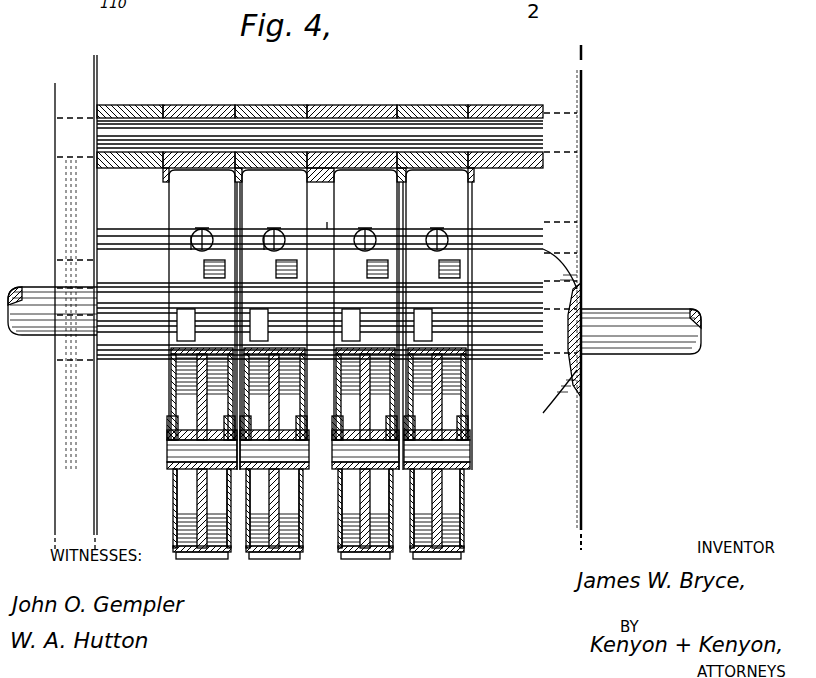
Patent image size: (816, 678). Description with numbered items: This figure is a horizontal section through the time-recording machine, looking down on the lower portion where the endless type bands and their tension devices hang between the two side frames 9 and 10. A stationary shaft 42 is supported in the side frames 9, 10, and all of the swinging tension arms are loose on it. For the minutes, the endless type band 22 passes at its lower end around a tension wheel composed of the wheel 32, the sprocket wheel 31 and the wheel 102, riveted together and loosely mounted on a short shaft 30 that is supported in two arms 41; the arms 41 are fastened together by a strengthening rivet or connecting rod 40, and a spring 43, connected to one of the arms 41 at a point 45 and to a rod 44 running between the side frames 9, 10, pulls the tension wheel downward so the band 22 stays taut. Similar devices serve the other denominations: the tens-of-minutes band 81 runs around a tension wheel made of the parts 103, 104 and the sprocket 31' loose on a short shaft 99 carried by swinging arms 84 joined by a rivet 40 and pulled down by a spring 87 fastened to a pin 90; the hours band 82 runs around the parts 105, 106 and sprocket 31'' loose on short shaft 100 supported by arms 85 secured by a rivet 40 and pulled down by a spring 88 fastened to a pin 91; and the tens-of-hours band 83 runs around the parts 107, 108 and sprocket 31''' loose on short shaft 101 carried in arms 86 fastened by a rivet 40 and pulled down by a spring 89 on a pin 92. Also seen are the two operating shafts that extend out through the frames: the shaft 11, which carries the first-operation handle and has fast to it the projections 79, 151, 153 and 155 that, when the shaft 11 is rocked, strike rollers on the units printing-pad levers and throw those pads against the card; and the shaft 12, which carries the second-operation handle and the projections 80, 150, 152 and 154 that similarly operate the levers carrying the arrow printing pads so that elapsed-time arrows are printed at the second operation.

The side frame 9 is at (56, 186).
The side frame 10 is at (571, 199).
The shaft 11 is at (33, 318).
The shaft 12 is at (661, 320).
The endless type band 22 is at (460, 554).
The short shaft 30 is at (470, 458).
The sprocket wheel 31 is at (437, 572).
The sprocket wheel 31' is at (365, 562).
The sprocket wheel 31'' is at (274, 563).
The sprocket wheel 31''' is at (202, 565).
The wheel 32 is at (455, 524).
The connecting rod 40 is at (215, 278).
The swinging arm 41 is at (483, 398).
The stationary shaft 42 is at (491, 122).
The spring 43 is at (438, 222).
The rod 44 is at (512, 228).
The spring connection point 45 is at (470, 222).
The projection 79 is at (505, 262).
The projection 80 is at (424, 325).
The endless band 81 is at (341, 548).
The endless band 82 is at (301, 552).
The endless band 83 is at (228, 553).
The swinging arm 84 is at (367, 191).
The swinging arm 85 is at (277, 189).
The swinging arm 86 is at (201, 189).
The spring 87 is at (367, 245).
The spring 88 is at (277, 245).
The spring 89 is at (203, 245).
The pin 90 is at (327, 222).
The pin 91 is at (264, 247).
The pin 92 is at (190, 248).
The short shaft 99 is at (345, 470).
The short shaft 100 is at (252, 470).
The short shaft 101 is at (174, 468).
The wheel 102 is at (425, 528).
The tension wheel part 103 is at (377, 520).
The tension wheel part 104 is at (351, 527).
The tension wheel part 105 is at (284, 553).
The tension wheel part 106 is at (267, 540).
The tension wheel part 107 is at (214, 555).
The tension wheel part 108 is at (189, 535).
The projection 150 is at (345, 315).
The projection 151 is at (367, 272).
The projection 152 is at (257, 316).
The projection 153 is at (298, 270).
The projection 154 is at (185, 322).
The projection 155 is at (204, 268).